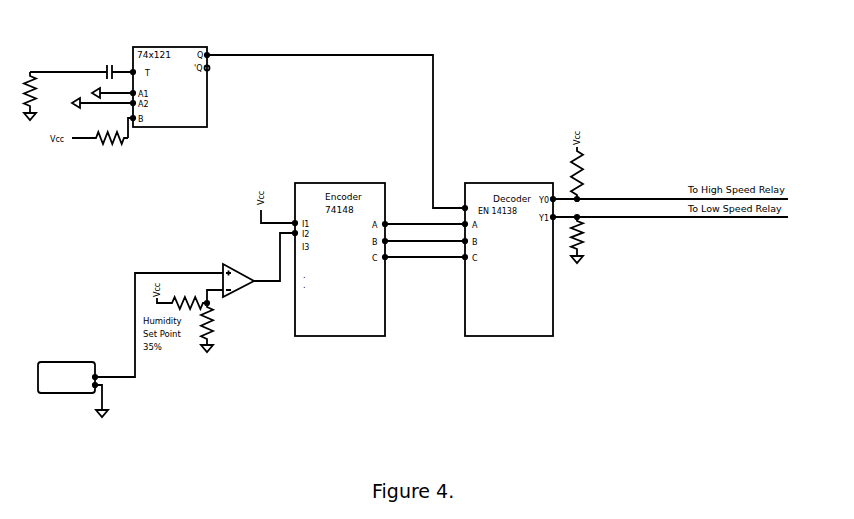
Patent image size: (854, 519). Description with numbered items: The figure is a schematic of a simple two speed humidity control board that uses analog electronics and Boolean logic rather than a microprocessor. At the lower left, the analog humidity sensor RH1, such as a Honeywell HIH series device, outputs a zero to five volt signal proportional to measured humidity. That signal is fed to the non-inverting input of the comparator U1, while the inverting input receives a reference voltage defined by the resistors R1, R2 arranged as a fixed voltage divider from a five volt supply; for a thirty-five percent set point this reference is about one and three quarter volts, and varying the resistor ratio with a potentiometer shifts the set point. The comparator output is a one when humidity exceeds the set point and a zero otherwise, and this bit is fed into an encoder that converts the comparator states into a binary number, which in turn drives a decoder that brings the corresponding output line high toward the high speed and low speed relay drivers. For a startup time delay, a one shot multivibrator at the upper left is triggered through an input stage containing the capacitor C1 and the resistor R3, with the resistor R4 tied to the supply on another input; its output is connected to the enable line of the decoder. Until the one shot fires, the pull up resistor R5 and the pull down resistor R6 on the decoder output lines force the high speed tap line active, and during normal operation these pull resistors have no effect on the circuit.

The set point resistor R1 is at (214, 327).
The set point resistor R2 is at (187, 297).
The one-shot timing resistor R3 is at (37, 96).
The pull-up resistor to B input R4 is at (110, 133).
The pull up resistor R5 is at (584, 173).
The pull down resistor R6 is at (584, 240).
The one-shot timing capacitor C1 is at (107, 78).
The comparator operational amplifier U1 is at (240, 273).
The analog humidity sensor RH1 is at (67, 377).